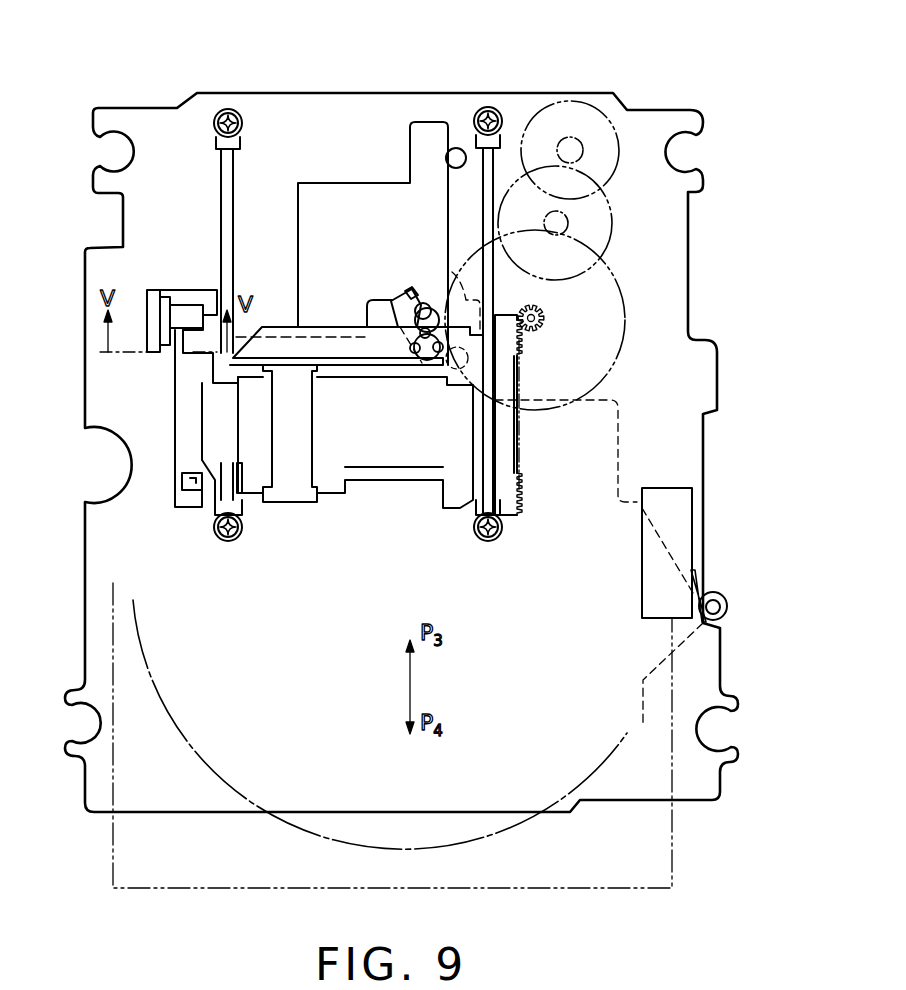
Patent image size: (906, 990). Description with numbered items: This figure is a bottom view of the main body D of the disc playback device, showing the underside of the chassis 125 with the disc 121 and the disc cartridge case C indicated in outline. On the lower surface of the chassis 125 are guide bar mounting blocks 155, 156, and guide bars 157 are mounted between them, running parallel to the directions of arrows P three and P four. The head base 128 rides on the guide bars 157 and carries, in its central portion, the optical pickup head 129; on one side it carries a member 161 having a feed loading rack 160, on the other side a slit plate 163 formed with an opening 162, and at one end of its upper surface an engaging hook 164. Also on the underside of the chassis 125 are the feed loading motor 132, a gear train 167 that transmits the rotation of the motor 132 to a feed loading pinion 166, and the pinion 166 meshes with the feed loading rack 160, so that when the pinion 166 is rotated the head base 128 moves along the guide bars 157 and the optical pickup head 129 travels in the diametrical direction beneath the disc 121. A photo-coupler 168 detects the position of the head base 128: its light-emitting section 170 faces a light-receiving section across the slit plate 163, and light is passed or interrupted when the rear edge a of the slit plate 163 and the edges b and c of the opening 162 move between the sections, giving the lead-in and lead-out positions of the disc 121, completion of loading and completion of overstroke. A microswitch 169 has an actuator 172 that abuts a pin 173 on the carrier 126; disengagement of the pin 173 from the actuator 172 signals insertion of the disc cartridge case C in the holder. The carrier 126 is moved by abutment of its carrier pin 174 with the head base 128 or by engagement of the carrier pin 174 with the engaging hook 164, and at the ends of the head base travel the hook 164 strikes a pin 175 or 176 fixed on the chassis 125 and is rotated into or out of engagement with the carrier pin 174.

The disc 121 is at (280, 813).
The chassis 125 is at (703, 452).
The carrier 126 is at (367, 318).
The head base 128 is at (270, 325).
The optical pickup head 129 is at (395, 487).
The feed loading motor 132 is at (608, 118).
The guide bar mounting block 155 is at (238, 130).
The guide bar mounting block 156 is at (242, 522).
The guide bar 157 is at (220, 205).
The feed loading rack 160 is at (522, 468).
The member having feed loading rack 161 is at (516, 492).
The opening 162 is at (182, 492).
The slit plate 163 is at (180, 413).
The engaging hook 164 is at (392, 300).
The feed loading pinion 166 is at (545, 320).
The gear train 167 is at (658, 234).
The photo-coupler 168 is at (165, 292).
The microswitch 169 is at (640, 604).
The light-emitting section 170 is at (188, 305).
The actuator 172 is at (706, 590).
The pin 173 is at (727, 610).
The carrier pin 174 is at (425, 306).
The pin 175 is at (449, 165).
The pin 176 is at (458, 368).
The disc cartridge case C is at (672, 856).
The main body D is at (578, 93).
The rear edge of the slit plate a is at (208, 300).
The edge of the opening b is at (190, 478).
The edge of the opening c is at (195, 497).